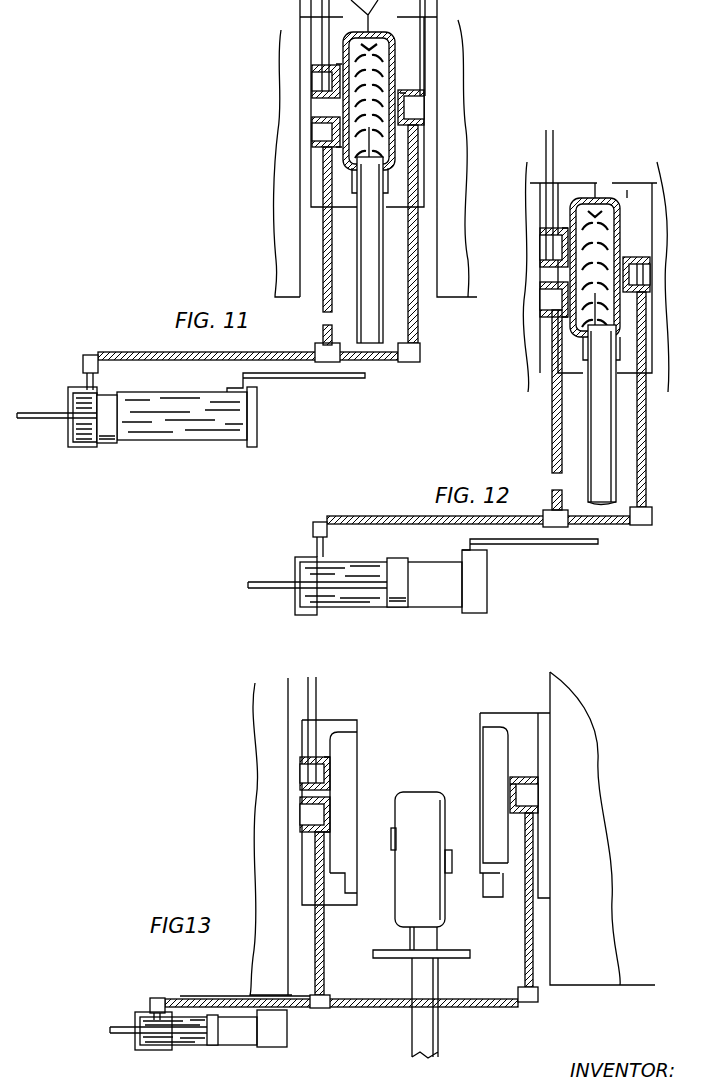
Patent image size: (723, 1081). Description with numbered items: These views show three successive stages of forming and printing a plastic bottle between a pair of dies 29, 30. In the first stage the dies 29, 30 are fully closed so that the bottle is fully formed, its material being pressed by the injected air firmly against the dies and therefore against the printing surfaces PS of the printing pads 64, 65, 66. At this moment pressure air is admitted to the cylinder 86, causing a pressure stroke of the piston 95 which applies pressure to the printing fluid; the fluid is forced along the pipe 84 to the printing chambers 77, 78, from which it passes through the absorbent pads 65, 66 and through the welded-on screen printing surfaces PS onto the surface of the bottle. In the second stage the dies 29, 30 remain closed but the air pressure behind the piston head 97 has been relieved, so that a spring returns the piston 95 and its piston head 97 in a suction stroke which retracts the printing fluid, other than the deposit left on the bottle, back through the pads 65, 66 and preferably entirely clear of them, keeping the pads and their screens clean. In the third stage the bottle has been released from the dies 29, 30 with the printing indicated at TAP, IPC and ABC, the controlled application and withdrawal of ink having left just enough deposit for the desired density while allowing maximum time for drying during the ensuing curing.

In FIG. 11, the die 29 is at (337, 25).
In FIG. 12, the die 29 is at (585, 190).
In FIG. 13, the die 29 is at (312, 730).
In FIG. 11, the die 30 is at (400, 25).
In FIG. 12, the die 30 is at (627, 190).
In FIG. 11, the printing pad 64 is at (317, 80).
In FIG. 12, the printing pad 64 is at (554, 247).
In FIG. 13, the printing pad 64 is at (331, 777).
In FIG. 11, the absorbent pad 65 is at (340, 132).
In FIG. 12, the absorbent pad 65 is at (554, 377).
In FIG. 13, the absorbent pad 65 is at (331, 825).
In FIG. 11, the absorbent pad 66 is at (423, 103).
In FIG. 12, the absorbent pad 66 is at (636, 382).
In FIG. 13, the absorbent pad 66 is at (510, 796).
In FIG. 11, the printing chamber 77 is at (317, 128).
In FIG. 13, the printing chamber 77 is at (300, 820).
In FIG. 11, the printing chamber 78 is at (423, 124).
In FIG. 13, the printing chamber 78 is at (510, 812).
In FIG. 11, the pipe 84 is at (418, 327).
In FIG. 12, the pipe 84 is at (646, 492).
In FIG. 13, the pipe 84 is at (344, 989).
In FIG. 11, the cylinder 86 is at (173, 440).
In FIG. 12, the cylinder 86 is at (441, 560).
In FIG. 13, the cylinder 86 is at (257, 1045).
In FIG. 11, the piston 95 is at (25, 418).
In FIG. 12, the piston 95 is at (286, 582).
In FIG. 11, the piston head 97 is at (105, 443).
In FIG. 12, the piston head 97 is at (398, 560).
In FIG. 13, the piston head 97 is at (213, 1045).
In FIG. 11, the printing surface PS is at (341, 66).
In FIG. 12, the printing surface PS is at (555, 330).
In FIG. 13, the printing surface PS is at (331, 760).
In FIG. 13, the printing TAP is at (392, 838).
In FIG. 13, the printing IPC is at (395, 893).
In FIG. 13, the printing ABC is at (447, 878).